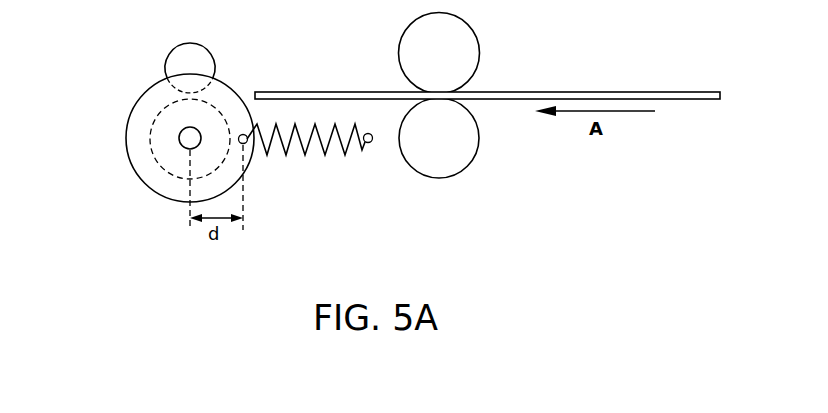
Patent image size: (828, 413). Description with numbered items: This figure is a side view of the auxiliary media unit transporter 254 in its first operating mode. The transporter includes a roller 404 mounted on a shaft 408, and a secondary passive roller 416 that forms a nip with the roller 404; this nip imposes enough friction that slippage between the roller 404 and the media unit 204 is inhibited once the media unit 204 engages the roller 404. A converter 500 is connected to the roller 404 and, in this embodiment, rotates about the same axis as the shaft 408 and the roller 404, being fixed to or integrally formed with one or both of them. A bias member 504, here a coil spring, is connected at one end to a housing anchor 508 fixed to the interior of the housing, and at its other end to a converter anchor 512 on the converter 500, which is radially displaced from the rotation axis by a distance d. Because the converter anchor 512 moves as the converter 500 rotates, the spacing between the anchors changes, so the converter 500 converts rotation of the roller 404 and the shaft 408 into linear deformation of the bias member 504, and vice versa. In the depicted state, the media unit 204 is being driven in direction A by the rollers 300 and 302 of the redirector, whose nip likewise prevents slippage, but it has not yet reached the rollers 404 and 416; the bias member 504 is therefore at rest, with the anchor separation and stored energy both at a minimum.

The auxiliary media unit transporter 254 is at (118, 52).
The converter 500 is at (140, 97).
The secondary passive roller 416 is at (190, 43).
The roller 404 is at (150, 128).
The shaft 408 is at (180, 142).
The converter anchor 512 is at (249, 144).
The bias member 504 is at (325, 156).
The housing anchor 508 is at (369, 144).
The roller 300 is at (472, 30).
The roller 302 is at (471, 162).
The media unit 204 is at (582, 92).